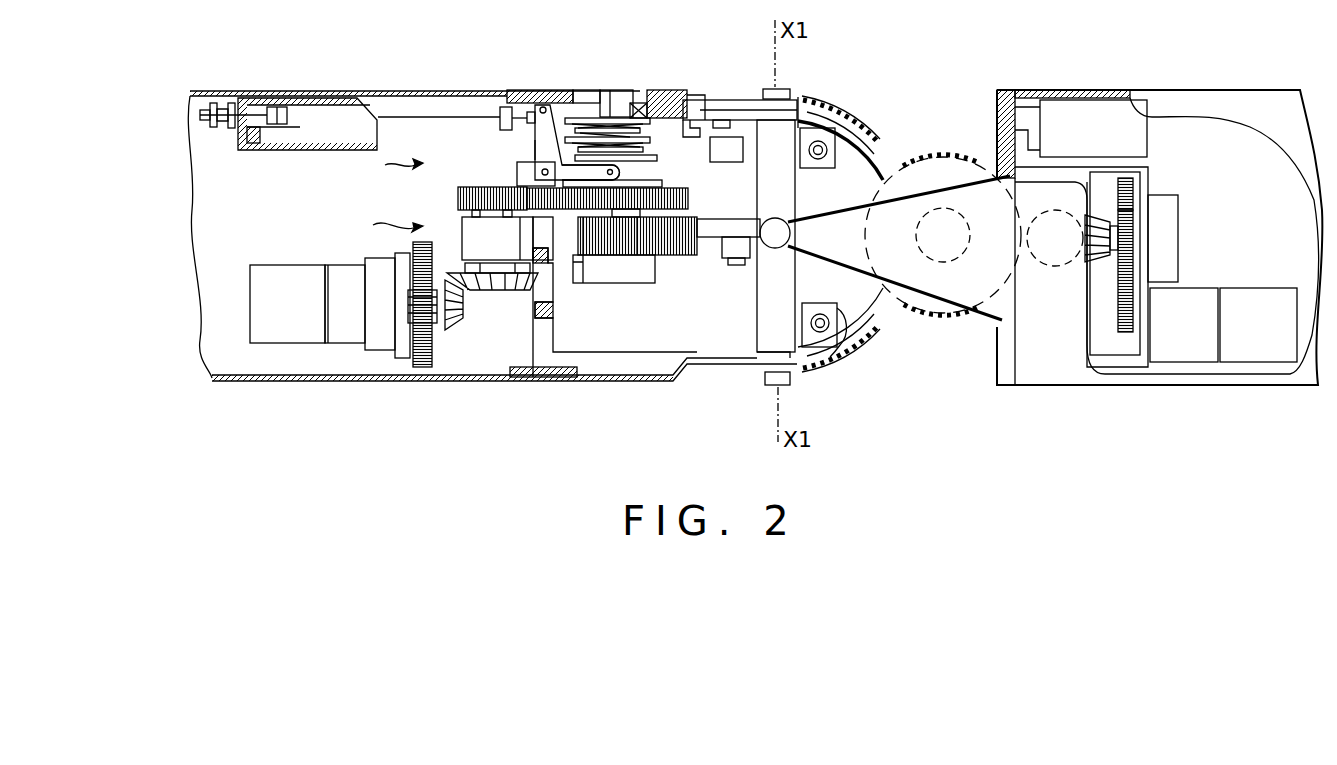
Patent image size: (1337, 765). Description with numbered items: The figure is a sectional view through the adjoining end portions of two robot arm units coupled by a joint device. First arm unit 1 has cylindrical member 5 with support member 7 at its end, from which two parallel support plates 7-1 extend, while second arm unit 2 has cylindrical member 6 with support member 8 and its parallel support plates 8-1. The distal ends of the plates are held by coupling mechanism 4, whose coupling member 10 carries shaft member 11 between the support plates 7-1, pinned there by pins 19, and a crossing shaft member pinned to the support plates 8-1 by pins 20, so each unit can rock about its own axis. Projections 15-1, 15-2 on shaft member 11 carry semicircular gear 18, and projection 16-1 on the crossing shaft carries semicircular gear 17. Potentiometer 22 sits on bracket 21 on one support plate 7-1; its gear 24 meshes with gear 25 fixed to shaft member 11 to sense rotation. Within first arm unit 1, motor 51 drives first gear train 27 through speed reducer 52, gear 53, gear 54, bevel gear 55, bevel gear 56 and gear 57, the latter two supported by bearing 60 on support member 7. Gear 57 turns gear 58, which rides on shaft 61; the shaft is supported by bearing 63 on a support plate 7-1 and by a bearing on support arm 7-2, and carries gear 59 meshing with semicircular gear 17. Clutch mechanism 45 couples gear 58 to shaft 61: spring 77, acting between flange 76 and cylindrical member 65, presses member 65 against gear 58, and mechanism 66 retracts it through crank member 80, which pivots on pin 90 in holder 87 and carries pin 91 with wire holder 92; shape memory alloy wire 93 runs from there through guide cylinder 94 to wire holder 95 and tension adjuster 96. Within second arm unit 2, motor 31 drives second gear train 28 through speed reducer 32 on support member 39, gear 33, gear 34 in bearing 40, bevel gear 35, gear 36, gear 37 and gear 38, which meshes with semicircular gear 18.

The first arm unit 1 is at (423, 62).
The second arm unit 2 is at (1180, 62).
The coupling mechanism 4 is at (799, 182).
The cylindrical member 5 is at (278, 382).
The cylindrical member 6 is at (1074, 92).
The support member 7 is at (566, 370).
The support plates 7-1 is at (695, 100).
The support arm 7-2 is at (632, 275).
The support member 8 is at (997, 105).
The support plates 8-1 is at (947, 170).
The coupling member 10 is at (756, 319).
The shaft member 11 is at (760, 290).
The projection 15-1 is at (862, 136).
The projection 15-2 is at (822, 330).
The projection 16-1 is at (718, 260).
The semicircular gear 17 is at (674, 255).
The semicircular gear 18 is at (855, 335).
The pin 19 is at (790, 90).
The pin 20 is at (792, 239).
The bracket 21 is at (697, 130).
The potentiometer 22 is at (730, 162).
The gear 24 is at (730, 103).
The gear 25 is at (802, 110).
The first gear train 27 is at (385, 220).
The second gear train 28 is at (1100, 195).
The motor 31 is at (1255, 292).
The speed reducer 32 is at (1197, 292).
The gear 33 is at (1118, 318).
The gear 34 is at (1135, 182).
The bevel gear 35 is at (1085, 262).
The gear 36 is at (1048, 272).
The gear 37 is at (925, 318).
The gear 38 is at (952, 262).
The support member 39 is at (1088, 158).
The bearing 40 is at (1175, 212).
The clutch mechanism 45 is at (390, 170).
The motor 51 is at (275, 270).
The speed reducer 52 is at (348, 272).
The gear 53 is at (434, 328).
The gear 54 is at (424, 368).
The bevel gear 55 is at (452, 330).
The bevel gear 56 is at (500, 290).
The gear 57 is at (458, 200).
The gear 58 is at (672, 195).
The gear 59 is at (586, 262).
The bearing 60 is at (475, 237).
The shaft 61 is at (612, 100).
The bearing 63 is at (638, 105).
The cylindrical member 65 is at (662, 170).
The mechanism 66 is at (536, 153).
The flange 76 is at (568, 118).
The spring 77 is at (652, 108).
The crank member 80 is at (537, 143).
The holder 87 is at (515, 172).
The pin 90 is at (545, 170).
The pin 91 is at (540, 108).
The wire holder 92 is at (500, 110).
The wire 93 is at (390, 119).
The guide cylinder 94 is at (306, 151).
The wire holder 95 is at (300, 108).
The tension adjuster 96 is at (226, 128).